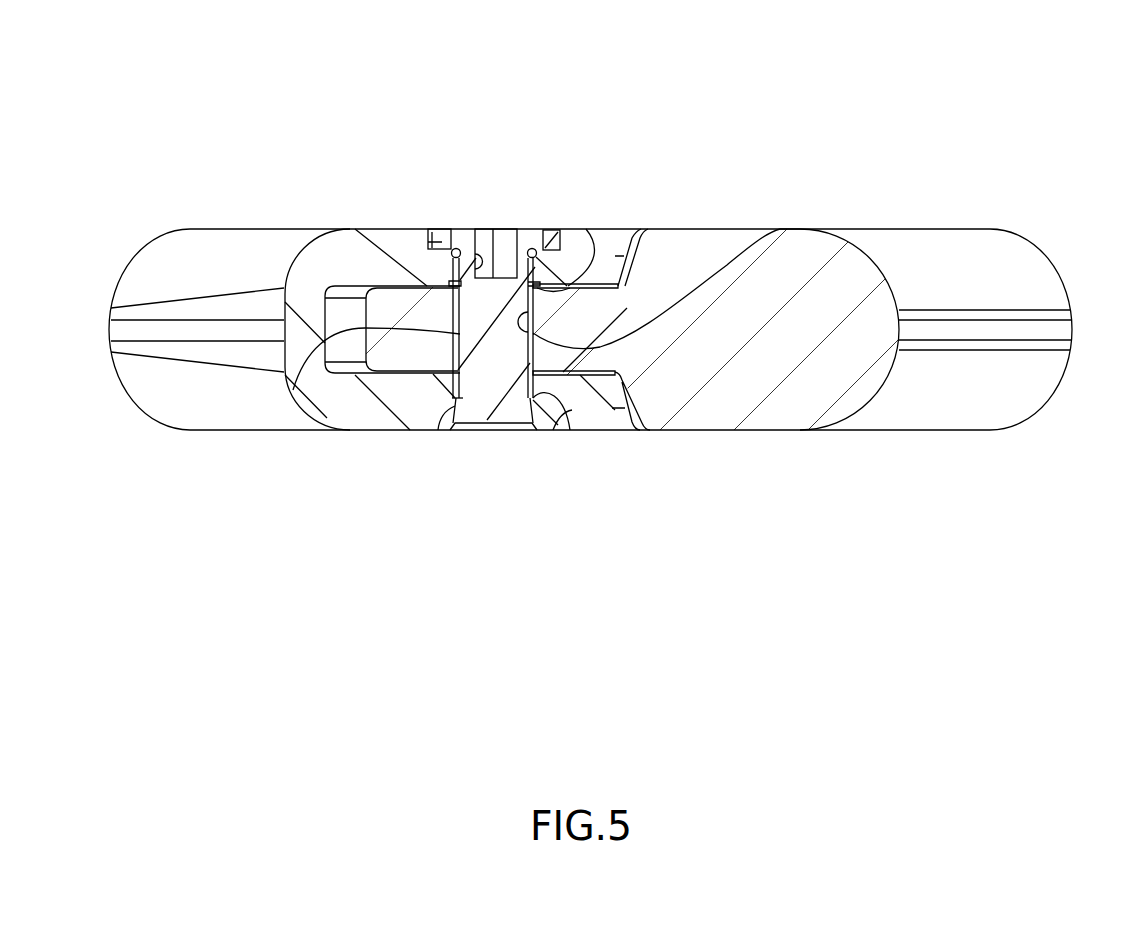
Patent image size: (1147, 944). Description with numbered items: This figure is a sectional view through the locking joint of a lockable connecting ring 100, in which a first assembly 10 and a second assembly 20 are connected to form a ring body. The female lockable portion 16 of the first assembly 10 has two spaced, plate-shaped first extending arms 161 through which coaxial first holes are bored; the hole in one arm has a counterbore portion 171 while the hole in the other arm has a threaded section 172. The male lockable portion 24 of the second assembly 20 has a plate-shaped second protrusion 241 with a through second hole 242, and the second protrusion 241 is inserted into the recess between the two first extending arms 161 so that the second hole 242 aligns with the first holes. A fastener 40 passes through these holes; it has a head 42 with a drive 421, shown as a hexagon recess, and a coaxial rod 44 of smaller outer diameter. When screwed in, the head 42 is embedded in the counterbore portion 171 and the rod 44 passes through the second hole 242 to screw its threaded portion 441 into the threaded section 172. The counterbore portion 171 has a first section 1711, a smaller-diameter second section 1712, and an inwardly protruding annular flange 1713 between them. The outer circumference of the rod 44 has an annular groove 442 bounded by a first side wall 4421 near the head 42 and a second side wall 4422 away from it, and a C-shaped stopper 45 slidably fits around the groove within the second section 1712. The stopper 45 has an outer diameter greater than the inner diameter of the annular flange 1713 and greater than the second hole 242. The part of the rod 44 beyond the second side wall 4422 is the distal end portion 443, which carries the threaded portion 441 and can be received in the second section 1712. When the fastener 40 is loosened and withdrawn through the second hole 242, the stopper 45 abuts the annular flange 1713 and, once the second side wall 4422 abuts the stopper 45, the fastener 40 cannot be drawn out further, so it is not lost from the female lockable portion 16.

The lockable connecting ring 100 is at (142, 148).
The first assembly 10 is at (112, 268).
The second assembly 20 is at (1053, 263).
The male lockable portion 24 is at (327, 386).
The second protrusion 241 is at (398, 362).
The second hole 242 is at (700, 275).
The annular groove 442 is at (348, 360).
The stopper 45 is at (448, 284).
The head 42 is at (448, 283).
The drive 421 is at (455, 248).
The counterbore portion 171 is at (542, 112).
The first section 1711 is at (540, 248).
The second section 1712 is at (477, 250).
The annular flange 1713 is at (540, 272).
The first side wall 4421 is at (620, 278).
The second side wall 4422 is at (570, 408).
The first extending arms 161 is at (592, 238).
The female lockable portion 16 is at (620, 428).
The rod 44 is at (515, 357).
The fastener 40 is at (522, 432).
The distal end portion 443 is at (495, 405).
The threaded portion 441 is at (443, 412).
The threaded section 172 is at (456, 407).